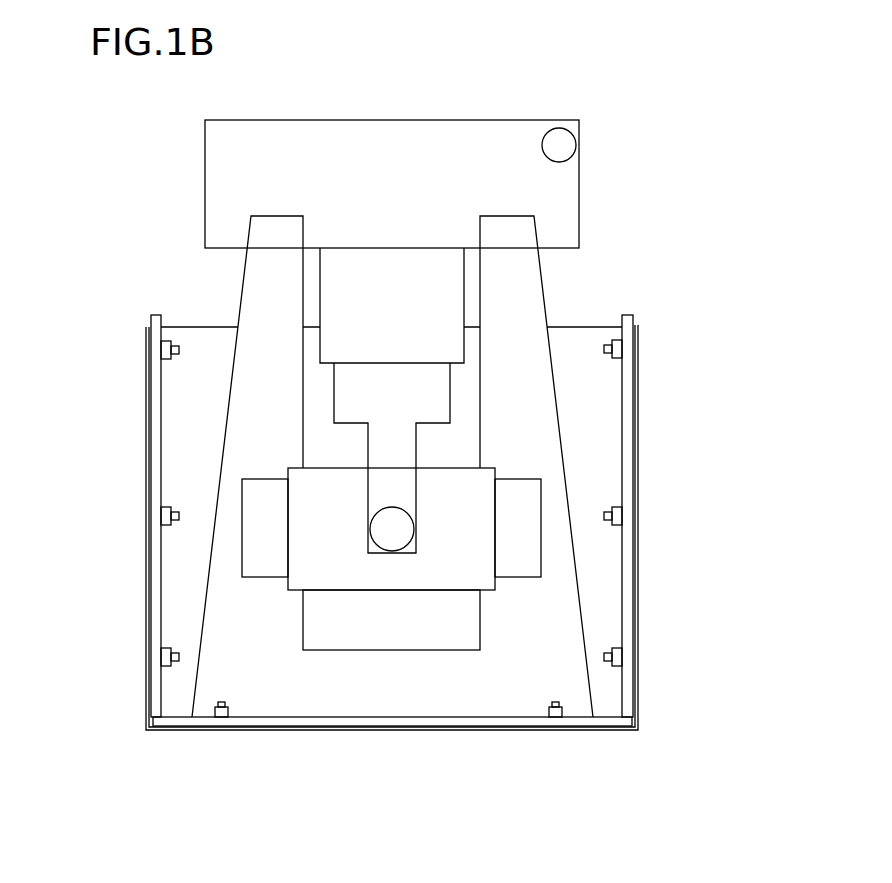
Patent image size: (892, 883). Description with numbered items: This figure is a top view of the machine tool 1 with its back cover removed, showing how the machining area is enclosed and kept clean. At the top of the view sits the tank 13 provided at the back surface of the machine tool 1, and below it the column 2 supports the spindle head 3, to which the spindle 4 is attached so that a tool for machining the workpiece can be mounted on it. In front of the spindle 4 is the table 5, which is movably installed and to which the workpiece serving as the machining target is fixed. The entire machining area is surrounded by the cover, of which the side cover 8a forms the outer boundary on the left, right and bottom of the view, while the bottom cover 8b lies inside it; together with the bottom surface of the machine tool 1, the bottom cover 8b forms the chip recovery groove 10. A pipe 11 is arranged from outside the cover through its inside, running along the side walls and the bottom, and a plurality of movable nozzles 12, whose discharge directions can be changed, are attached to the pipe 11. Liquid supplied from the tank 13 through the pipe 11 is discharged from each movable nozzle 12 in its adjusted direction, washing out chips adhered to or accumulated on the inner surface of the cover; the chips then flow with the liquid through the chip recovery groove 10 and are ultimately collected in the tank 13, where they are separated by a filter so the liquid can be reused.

The machine tool 1 is at (113, 133).
The column 2 is at (409, 263).
The spindle head 3 is at (367, 472).
The spindle 4 is at (405, 527).
The table 5 is at (253, 579).
The side cover 8a is at (146, 657).
The bottom cover 8b is at (217, 364).
The chip recovery groove 10 is at (248, 292).
The pipe 11 is at (152, 318).
The movable nozzle 12 is at (163, 350).
The tank 13 is at (308, 119).